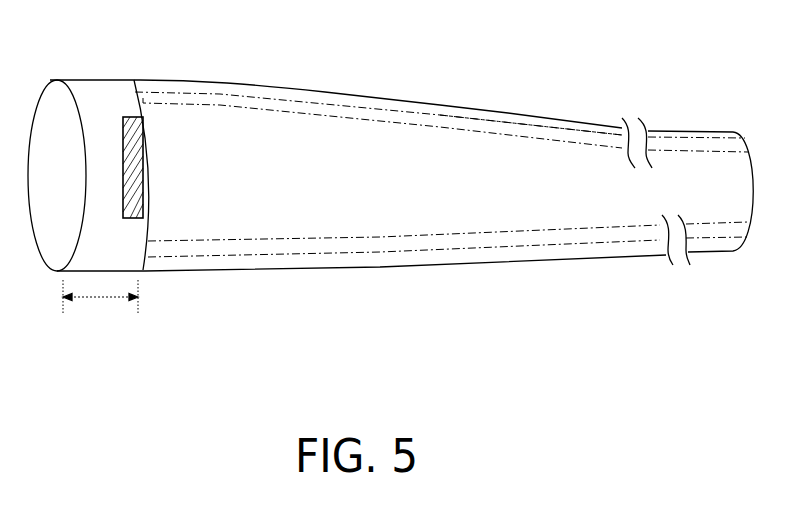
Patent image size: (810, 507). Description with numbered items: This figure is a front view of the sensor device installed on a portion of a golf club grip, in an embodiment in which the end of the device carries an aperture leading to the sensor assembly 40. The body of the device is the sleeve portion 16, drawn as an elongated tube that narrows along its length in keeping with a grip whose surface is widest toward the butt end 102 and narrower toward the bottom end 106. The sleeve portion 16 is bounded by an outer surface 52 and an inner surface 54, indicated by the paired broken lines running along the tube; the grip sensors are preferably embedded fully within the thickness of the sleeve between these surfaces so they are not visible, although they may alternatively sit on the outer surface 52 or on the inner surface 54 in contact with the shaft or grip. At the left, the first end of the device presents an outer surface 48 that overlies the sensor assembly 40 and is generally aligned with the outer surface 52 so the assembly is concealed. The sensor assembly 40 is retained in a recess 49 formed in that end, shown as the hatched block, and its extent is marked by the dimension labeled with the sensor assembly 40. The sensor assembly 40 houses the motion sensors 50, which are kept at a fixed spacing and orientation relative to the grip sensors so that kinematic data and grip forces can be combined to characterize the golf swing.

The sleeve portion 16 is at (325, 92).
The sensor assembly 40 is at (97, 299).
The outer surface 48 is at (85, 110).
The recess 49 is at (122, 130).
The motion sensors 50 is at (155, 133).
The outer surface 52 is at (438, 106).
The inner surface 54 is at (508, 117).
The butt end 102 is at (152, 215).
The bottom end 106 is at (275, 242).